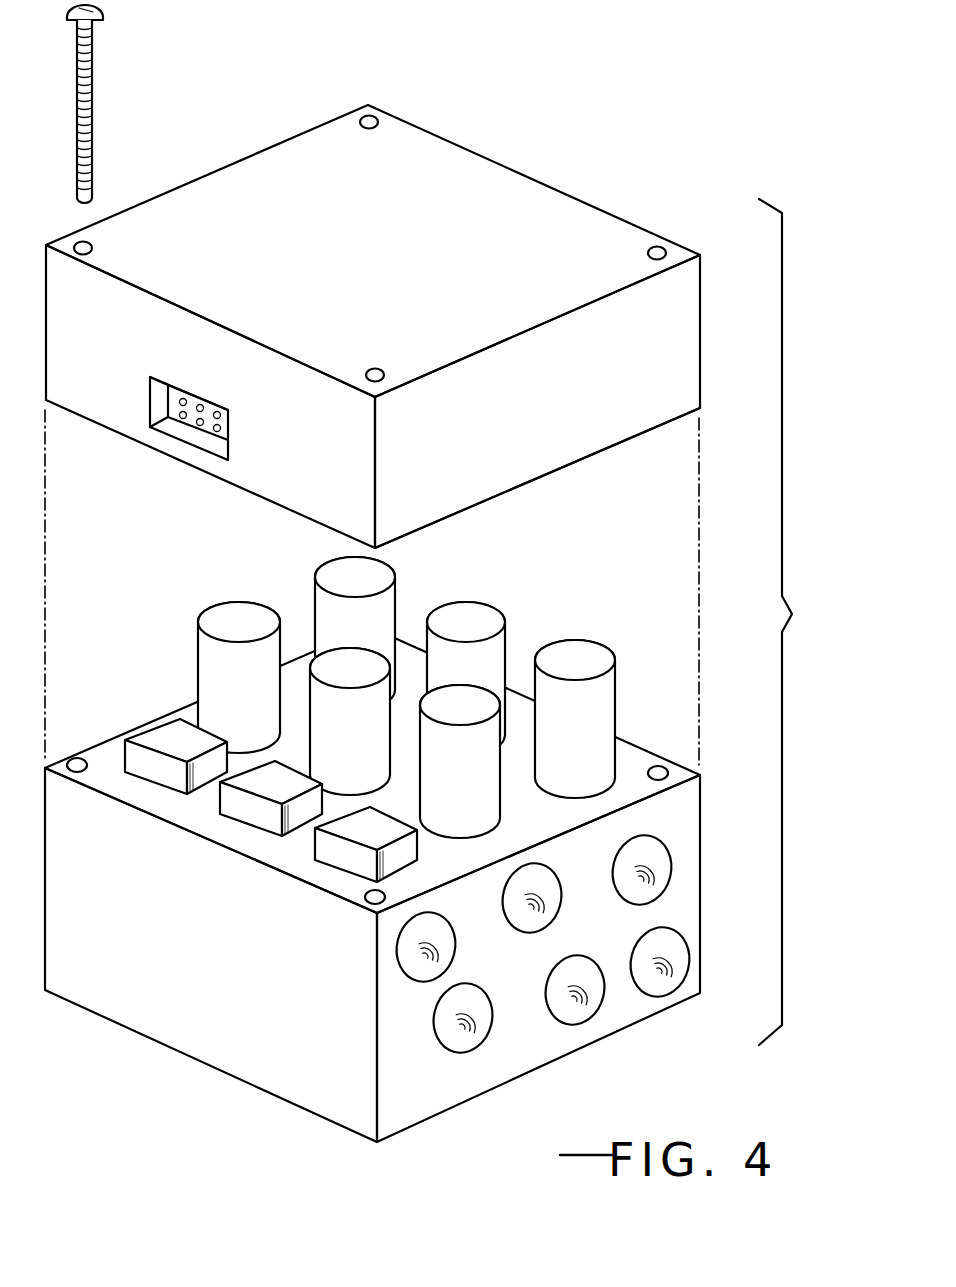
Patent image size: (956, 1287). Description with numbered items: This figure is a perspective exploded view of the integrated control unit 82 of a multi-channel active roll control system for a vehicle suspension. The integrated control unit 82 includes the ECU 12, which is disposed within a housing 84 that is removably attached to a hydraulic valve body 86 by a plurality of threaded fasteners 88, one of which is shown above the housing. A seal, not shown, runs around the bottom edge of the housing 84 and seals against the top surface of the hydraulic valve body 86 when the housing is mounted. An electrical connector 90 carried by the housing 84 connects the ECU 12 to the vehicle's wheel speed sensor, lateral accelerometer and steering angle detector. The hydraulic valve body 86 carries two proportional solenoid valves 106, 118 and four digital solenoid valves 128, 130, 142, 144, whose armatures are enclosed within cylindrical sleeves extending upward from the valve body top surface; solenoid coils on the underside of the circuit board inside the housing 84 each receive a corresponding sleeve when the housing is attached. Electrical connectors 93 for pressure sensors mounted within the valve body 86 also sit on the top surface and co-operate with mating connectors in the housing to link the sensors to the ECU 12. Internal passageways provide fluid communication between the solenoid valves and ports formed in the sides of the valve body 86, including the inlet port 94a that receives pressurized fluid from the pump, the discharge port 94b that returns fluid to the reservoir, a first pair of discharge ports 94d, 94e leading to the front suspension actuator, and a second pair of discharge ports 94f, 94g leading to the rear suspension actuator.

The ECU 12 is at (534, 500).
The integrated control unit 82 is at (797, 622).
The housing 84 is at (498, 162).
The hydraulic valve body 86 is at (172, 1048).
The threaded fastener 88 is at (95, 112).
The electrical connector 90 is at (140, 399).
The electrical connectors for pressure sensors 93 is at (333, 855).
The valve body inlet port 94a is at (455, 950).
The valve body discharge port 94b is at (488, 1036).
The discharge port 94d is at (557, 880).
The discharge port 94e is at (597, 1009).
The discharge port 94f is at (671, 867).
The discharge port 94g is at (688, 970).
The proportional solenoid valve 106 is at (260, 697).
The proportional solenoid valve 118 is at (374, 635).
The digital solenoid valve 128 is at (482, 675).
The digital solenoid valve 130 is at (370, 733).
The digital solenoid valve 142 is at (479, 777).
The digital solenoid valve 144 is at (593, 737).